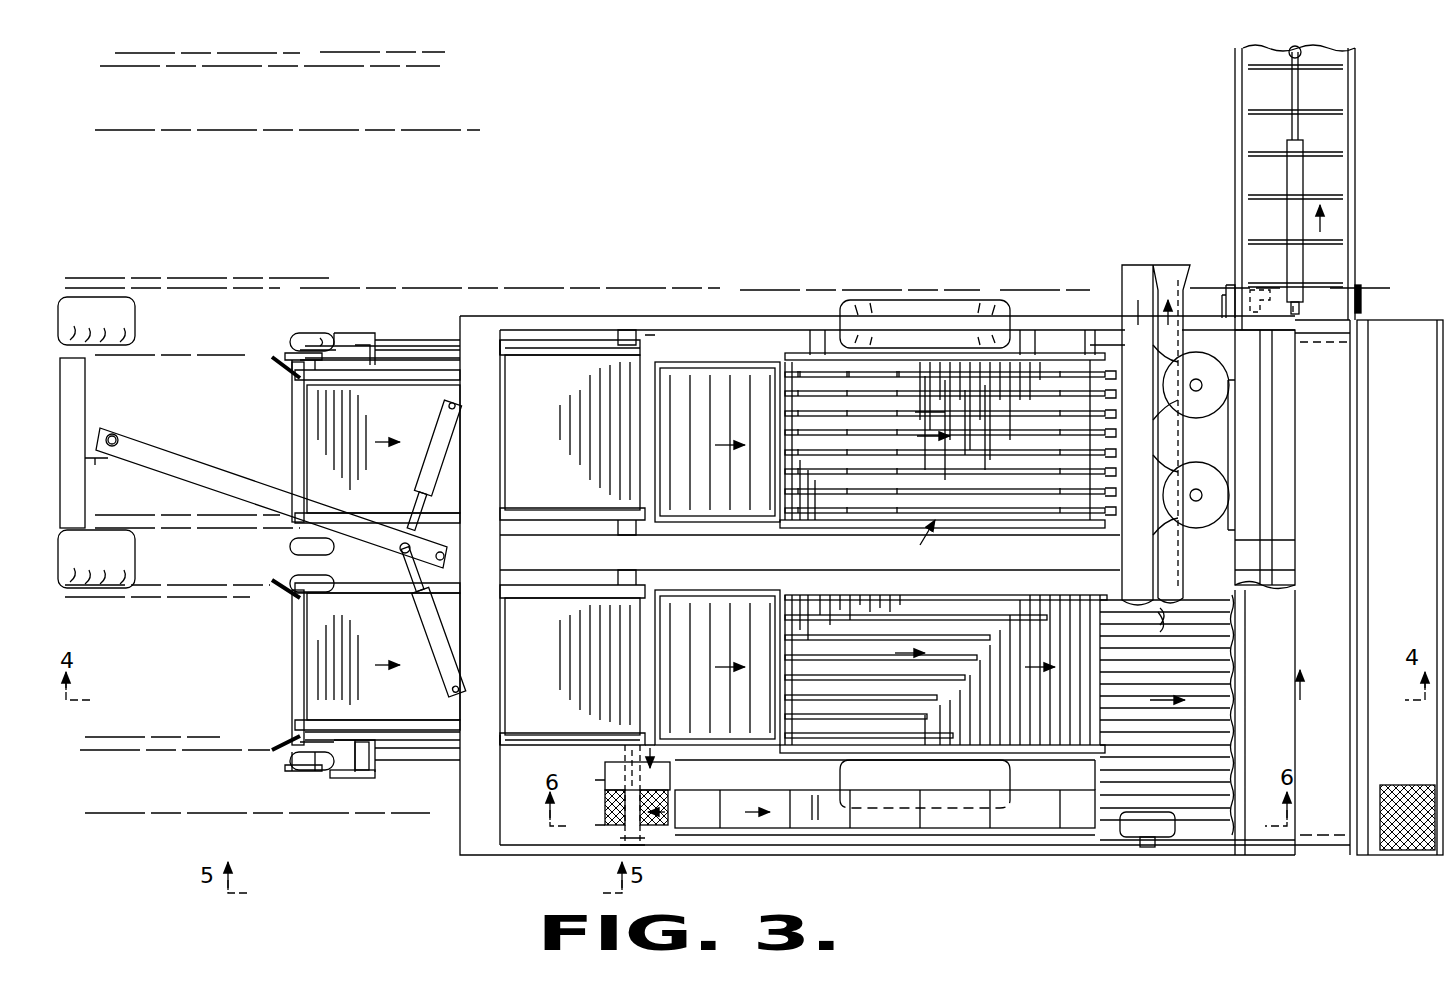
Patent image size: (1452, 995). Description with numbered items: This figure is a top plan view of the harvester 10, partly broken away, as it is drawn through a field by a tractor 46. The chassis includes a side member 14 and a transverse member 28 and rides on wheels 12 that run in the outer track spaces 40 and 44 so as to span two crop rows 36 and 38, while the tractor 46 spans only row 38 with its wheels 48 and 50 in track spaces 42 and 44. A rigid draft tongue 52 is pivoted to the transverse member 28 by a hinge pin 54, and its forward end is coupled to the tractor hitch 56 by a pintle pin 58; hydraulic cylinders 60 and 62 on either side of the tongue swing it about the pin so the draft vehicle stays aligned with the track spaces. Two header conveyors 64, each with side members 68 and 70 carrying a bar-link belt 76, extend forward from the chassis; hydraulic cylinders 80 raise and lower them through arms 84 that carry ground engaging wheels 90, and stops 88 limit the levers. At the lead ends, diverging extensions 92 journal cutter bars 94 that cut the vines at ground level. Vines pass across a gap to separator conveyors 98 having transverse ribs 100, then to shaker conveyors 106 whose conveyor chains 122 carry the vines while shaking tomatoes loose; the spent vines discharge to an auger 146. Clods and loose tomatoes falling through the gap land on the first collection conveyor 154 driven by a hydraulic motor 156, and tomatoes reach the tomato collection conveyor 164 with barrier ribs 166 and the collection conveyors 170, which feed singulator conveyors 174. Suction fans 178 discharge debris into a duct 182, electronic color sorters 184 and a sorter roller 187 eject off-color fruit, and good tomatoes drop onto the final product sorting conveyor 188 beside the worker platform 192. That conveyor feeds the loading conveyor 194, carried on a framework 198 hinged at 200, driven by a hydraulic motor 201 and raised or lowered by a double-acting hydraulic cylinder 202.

The harvester 10 is at (815, 232).
The wheels 12 is at (945, 300).
The side member 14 is at (548, 318).
The transverse member 28 is at (500, 472).
The crop row 36 is at (211, 677).
The crop row 38 is at (211, 434).
The track space 40 is at (191, 794).
The track space 42 is at (222, 570).
The track space 44 is at (222, 334).
The tractor 46 is at (90, 390).
The tractor wheel 48 is at (134, 562).
The tractor wheel 50 is at (132, 318).
The draft tongue 52 is at (195, 480).
The hinge pin 54 is at (450, 550).
The hitch 56 is at (94, 465).
The pintle pin 58 is at (118, 432).
The hydraulic cylinder 60 is at (425, 625).
The hydraulic cylinder 62 is at (420, 484).
The header conveyor 64 is at (300, 405).
The side member 68 is at (512, 365).
The side member 70 is at (530, 520).
The belt 76 is at (390, 474).
The hydraulic cylinder 80 is at (440, 765).
The arm 84 is at (335, 780).
The stop 88 is at (362, 772).
The ground engaging wheel 90 is at (292, 345).
The diverging extension 92 is at (275, 365).
The cutter bar 94 is at (290, 420).
The separator conveyor 98 is at (728, 522).
The rib 100 is at (715, 380).
The shaker conveyor 106 is at (925, 548).
The conveyor chain 122 is at (1000, 492).
The auger 146 is at (1160, 615).
The first collection conveyor 154 is at (672, 770).
The hydraulic motor 156 is at (605, 800).
The tomato collection conveyor 164 is at (818, 815).
The barrier rib 166 is at (945, 820).
The collection conveyor 170 is at (1025, 694).
The singulator conveyor 174 is at (1187, 676).
The suction fan 178 is at (1190, 468).
The duct 182 is at (1125, 300).
The electronic color sorter 184 is at (1288, 525).
The sorter roller 187 is at (1240, 735).
The final product sorting conveyor 188 is at (1318, 634).
The worker platform 192 is at (1420, 370).
The loading conveyor 194 is at (1355, 120).
The framework 198 is at (1355, 178).
The hinge connection 200 is at (1365, 306).
The hydraulic motor 201 is at (1240, 282).
The double-acting hydraulic cylinder 202 is at (1290, 205).